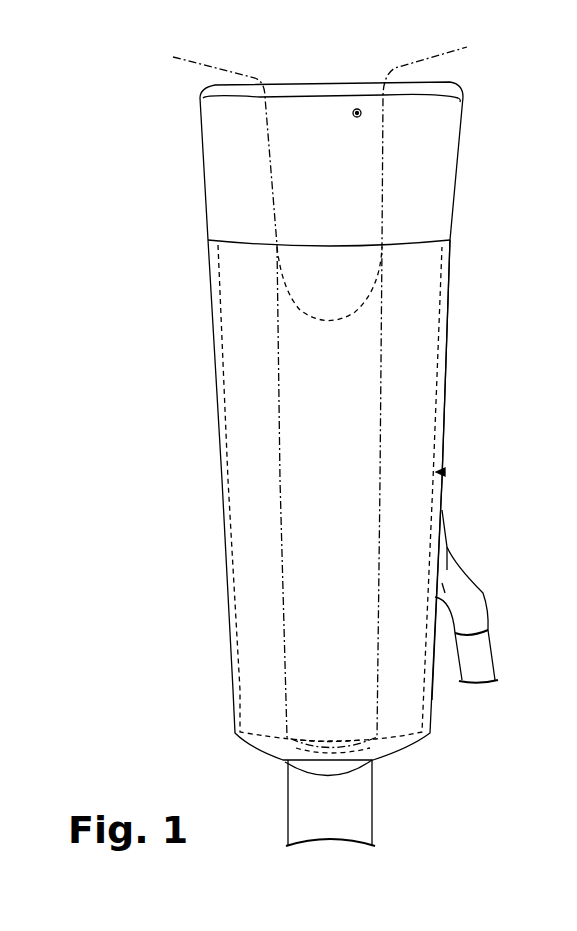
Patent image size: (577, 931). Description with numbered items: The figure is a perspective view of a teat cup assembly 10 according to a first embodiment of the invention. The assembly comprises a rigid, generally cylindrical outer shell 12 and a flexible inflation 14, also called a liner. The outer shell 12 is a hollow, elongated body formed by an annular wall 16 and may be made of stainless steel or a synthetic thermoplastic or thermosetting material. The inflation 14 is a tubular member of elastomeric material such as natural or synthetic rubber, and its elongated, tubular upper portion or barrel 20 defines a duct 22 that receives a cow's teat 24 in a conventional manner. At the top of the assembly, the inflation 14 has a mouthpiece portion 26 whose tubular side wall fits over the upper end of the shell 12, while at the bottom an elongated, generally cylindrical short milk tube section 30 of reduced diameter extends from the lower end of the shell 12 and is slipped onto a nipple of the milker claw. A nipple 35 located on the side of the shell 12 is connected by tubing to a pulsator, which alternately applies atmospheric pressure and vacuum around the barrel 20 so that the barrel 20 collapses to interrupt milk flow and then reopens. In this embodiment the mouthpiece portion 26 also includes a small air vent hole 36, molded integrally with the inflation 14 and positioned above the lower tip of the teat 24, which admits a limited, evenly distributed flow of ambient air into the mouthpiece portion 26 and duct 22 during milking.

The teat cup assembly 10 is at (108, 170).
The outer shell 12 is at (220, 485).
The inflation 14 is at (445, 472).
The annular wall 16 is at (447, 373).
The barrel 20 is at (443, 418).
The duct 22 is at (342, 646).
The teat 24 is at (375, 188).
The mouthpiece portion 26 is at (203, 160).
The short milk tube section 30 is at (363, 803).
The nipple 35 is at (475, 610).
The air vent hole 36 is at (362, 112).